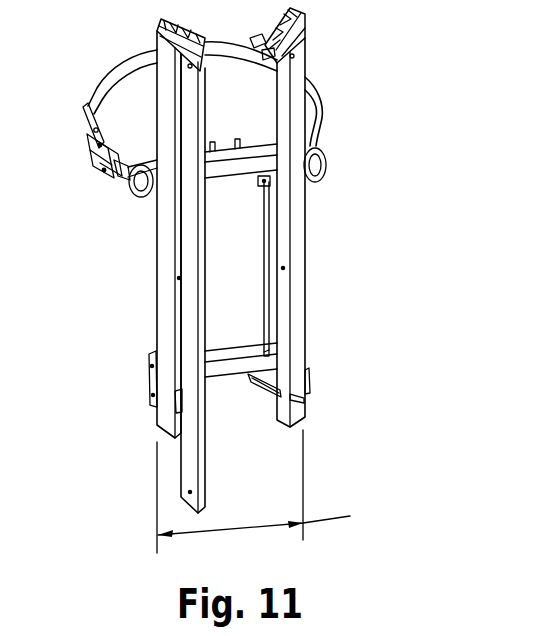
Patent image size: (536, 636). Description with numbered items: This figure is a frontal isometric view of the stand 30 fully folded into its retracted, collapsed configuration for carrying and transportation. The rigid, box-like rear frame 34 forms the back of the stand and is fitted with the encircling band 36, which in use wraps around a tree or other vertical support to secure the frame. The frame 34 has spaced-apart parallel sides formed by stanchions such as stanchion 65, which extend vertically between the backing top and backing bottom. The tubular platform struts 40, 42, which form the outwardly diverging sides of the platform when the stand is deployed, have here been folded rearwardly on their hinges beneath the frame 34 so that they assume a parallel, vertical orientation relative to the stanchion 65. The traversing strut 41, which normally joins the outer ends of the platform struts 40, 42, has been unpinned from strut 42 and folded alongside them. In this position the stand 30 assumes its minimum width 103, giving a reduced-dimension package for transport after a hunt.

The stand 30 is at (408, 93).
The frame 34 is at (262, 290).
The encircling band 36 is at (100, 81).
The platform strut 40 is at (157, 263).
The traversing strut 41 is at (207, 465).
The platform strut 42 is at (305, 287).
The stanchion 65 is at (270, 220).
The minimum width 103 is at (285, 491).